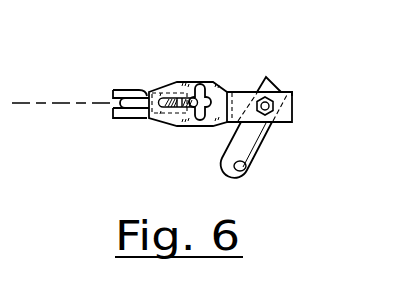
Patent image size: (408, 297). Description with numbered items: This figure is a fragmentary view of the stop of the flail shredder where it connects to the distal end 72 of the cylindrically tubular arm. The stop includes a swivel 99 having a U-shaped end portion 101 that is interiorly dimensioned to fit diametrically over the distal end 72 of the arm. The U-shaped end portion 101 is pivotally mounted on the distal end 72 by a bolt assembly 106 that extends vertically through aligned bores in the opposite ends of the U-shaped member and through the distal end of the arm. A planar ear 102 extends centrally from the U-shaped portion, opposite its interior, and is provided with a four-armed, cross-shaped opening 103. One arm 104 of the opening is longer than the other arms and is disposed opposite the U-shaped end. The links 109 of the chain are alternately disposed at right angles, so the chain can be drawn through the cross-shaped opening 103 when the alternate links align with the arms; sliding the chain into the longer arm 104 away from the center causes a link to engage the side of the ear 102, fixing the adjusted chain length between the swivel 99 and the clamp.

The links 109 is at (167, 95).
The cross-shaped opening 103 is at (204, 94).
The longer arm 104 is at (178, 108).
The planar ear 102 is at (212, 115).
The bolt assembly 106 is at (268, 97).
The swivel 99 is at (293, 92).
The U-shaped end portion 101 is at (292, 112).
The distal end 72 is at (257, 156).